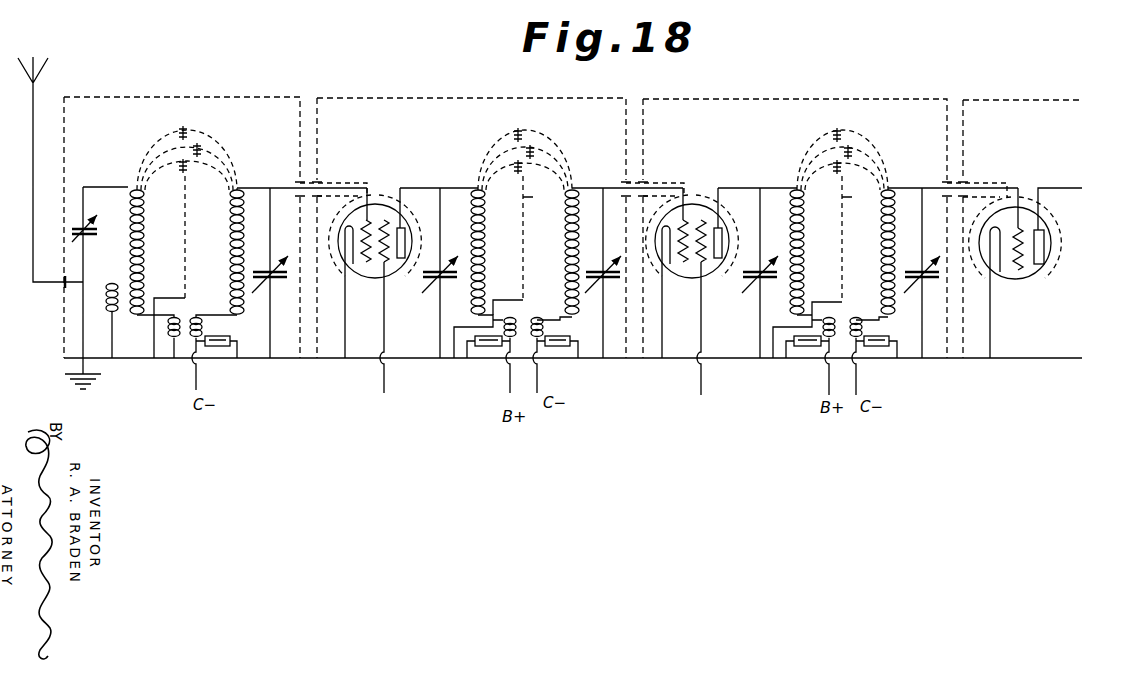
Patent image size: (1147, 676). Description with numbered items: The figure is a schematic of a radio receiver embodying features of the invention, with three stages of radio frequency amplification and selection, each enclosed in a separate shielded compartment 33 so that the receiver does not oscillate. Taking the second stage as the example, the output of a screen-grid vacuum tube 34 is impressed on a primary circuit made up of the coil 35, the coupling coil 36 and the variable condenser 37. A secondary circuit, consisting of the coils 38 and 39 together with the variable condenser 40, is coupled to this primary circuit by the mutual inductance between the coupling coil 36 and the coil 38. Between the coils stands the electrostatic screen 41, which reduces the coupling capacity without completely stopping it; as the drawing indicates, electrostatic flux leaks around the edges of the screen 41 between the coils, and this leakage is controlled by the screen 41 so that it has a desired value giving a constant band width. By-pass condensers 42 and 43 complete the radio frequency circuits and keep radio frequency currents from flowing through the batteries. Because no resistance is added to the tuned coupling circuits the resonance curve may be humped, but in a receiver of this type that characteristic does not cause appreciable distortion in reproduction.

The shielded compartment 33 is at (103, 95).
The screen-grid vacuum tube 34 is at (370, 200).
The coil 35 is at (487, 292).
The coupling coil 36 is at (511, 340).
The variable condenser 37 is at (443, 282).
The coil 38 is at (534, 318).
The coil 39 is at (567, 248).
The variable condenser 40 is at (607, 285).
The electrostatic screen 41 is at (525, 197).
The by-pass condenser 42 is at (492, 347).
The by-pass condenser 43 is at (557, 347).